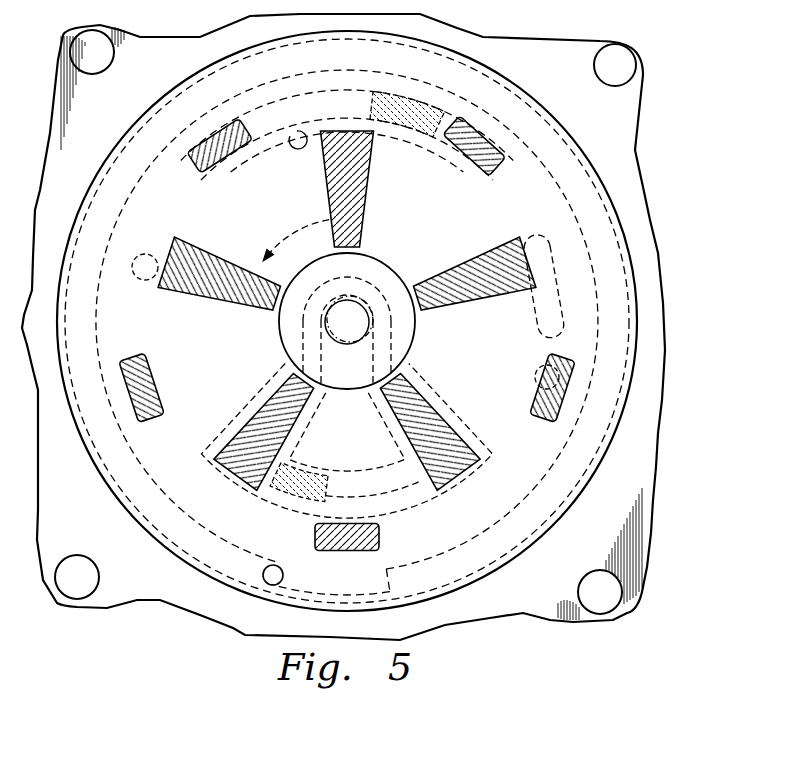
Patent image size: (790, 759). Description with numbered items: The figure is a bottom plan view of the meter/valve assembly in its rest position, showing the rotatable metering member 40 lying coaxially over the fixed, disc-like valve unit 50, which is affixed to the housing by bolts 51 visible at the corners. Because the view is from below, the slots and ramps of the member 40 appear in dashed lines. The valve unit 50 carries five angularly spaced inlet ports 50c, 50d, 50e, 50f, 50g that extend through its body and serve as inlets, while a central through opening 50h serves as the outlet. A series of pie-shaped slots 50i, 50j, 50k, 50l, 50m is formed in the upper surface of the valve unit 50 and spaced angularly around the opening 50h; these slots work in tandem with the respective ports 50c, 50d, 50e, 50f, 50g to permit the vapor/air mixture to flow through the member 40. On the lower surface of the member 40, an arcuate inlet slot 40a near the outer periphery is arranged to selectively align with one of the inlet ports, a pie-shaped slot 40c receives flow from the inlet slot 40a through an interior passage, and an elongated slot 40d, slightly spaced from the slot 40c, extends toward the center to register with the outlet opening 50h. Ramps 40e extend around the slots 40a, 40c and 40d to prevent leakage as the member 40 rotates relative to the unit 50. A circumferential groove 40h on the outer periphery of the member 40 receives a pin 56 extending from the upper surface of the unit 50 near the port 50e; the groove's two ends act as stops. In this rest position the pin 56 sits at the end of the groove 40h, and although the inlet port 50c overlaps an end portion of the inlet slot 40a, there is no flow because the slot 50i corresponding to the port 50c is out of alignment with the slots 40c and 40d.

The metering member 40 is at (522, 96).
The inlet slot 40a is at (290, 137).
The pie-shaped slot 40c is at (320, 500).
The elongated slot 40d is at (368, 431).
The ramps 40e is at (352, 478).
The circumferential groove 40h is at (613, 262).
The valve unit 50 is at (648, 187).
The inlet port 50c is at (222, 153).
The inlet port 50d is at (147, 378).
The inlet port 50e is at (379, 541).
The inlet port 50f is at (543, 407).
The inlet port 50g is at (472, 152).
The outlet opening 50h is at (358, 303).
The pie-shaped slot 50i is at (425, 412).
The pie-shaped slot 50j is at (471, 298).
The pie-shaped slot 50k is at (360, 226).
The pie-shaped slot 50l is at (203, 259).
The pie-shaped slot 50m is at (252, 427).
The bolts 51 is at (612, 86).
The pin 56 is at (146, 255).